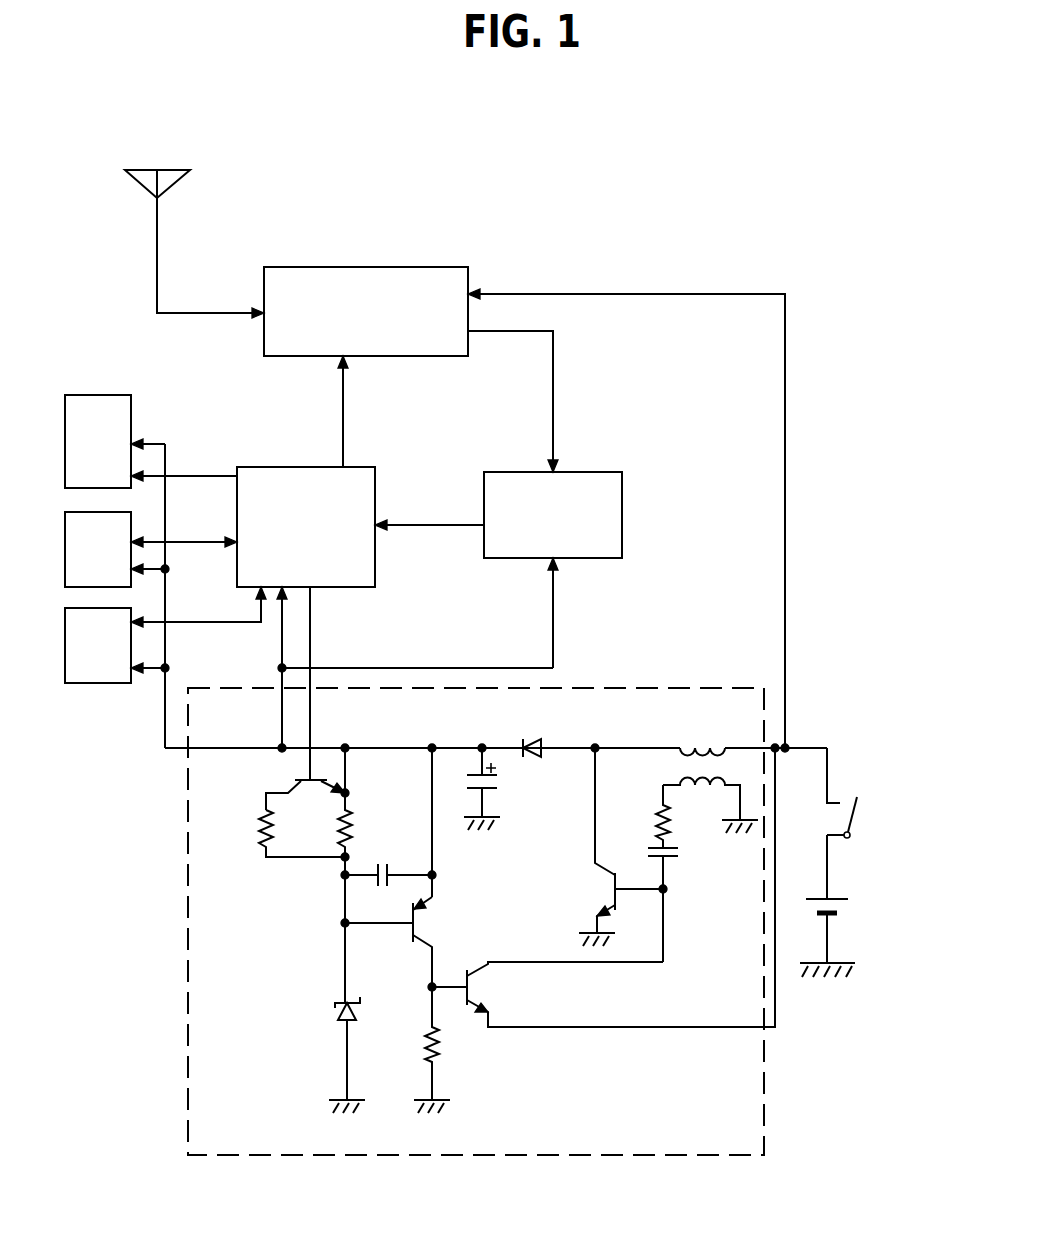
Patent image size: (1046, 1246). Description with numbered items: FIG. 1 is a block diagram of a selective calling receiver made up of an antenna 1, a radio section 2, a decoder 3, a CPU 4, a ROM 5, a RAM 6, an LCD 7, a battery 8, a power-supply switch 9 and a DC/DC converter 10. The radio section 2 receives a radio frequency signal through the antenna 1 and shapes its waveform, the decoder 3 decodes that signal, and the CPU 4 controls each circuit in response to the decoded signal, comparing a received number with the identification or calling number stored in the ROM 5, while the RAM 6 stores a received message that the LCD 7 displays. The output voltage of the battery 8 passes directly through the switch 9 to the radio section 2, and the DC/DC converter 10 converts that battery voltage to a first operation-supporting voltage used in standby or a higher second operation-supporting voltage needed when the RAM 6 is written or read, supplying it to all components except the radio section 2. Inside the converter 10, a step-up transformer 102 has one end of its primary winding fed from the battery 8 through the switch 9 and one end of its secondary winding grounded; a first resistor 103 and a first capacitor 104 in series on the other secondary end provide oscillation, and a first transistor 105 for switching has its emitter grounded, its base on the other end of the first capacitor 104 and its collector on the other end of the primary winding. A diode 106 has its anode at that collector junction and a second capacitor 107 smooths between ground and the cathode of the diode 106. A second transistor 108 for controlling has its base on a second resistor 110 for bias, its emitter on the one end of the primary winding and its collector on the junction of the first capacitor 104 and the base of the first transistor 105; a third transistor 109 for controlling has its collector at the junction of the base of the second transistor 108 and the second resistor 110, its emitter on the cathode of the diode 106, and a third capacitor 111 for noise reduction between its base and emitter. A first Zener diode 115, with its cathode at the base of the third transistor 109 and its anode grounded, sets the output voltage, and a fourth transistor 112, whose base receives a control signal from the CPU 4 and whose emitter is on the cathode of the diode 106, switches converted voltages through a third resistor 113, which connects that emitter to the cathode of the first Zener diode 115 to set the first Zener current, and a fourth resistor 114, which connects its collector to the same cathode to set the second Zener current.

The antenna 1 is at (168, 170).
The radio section 2 is at (400, 356).
The decoder 3 is at (580, 472).
The CPU 4 is at (272, 467).
The ROM 5 is at (131, 525).
The RAM 6 is at (128, 683).
The LCD 7 is at (131, 410).
The battery 8 is at (852, 915).
The power-supply switch 9 is at (856, 795).
The DC/DC converter 10 is at (492, 1158).
The step-up transformer 102 is at (700, 750).
The first resistor 103 is at (660, 815).
The first capacitor 104 is at (689, 901).
The first transistor 105 is at (600, 890).
The diode 106 is at (545, 738).
The second capacitor 107 is at (513, 789).
The second transistor 108 is at (486, 987).
The third transistor 109 is at (428, 920).
The second resistor 110 is at (440, 1045).
The third capacitor 111 is at (383, 870).
The fourth transistor 112 is at (312, 778).
The third resistor 113 is at (348, 810).
The fourth resistor 114 is at (262, 812).
The first Zener diode 115 is at (334, 1008).